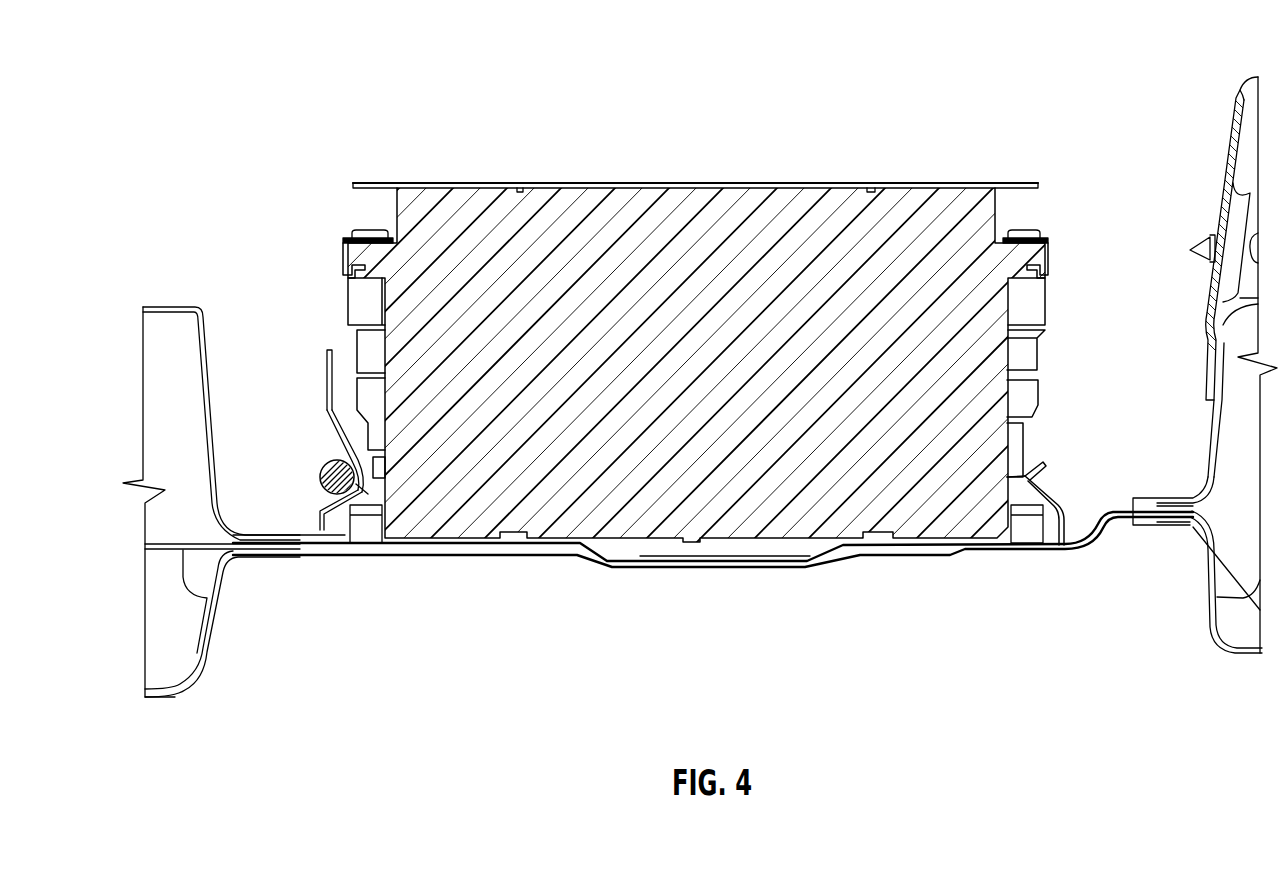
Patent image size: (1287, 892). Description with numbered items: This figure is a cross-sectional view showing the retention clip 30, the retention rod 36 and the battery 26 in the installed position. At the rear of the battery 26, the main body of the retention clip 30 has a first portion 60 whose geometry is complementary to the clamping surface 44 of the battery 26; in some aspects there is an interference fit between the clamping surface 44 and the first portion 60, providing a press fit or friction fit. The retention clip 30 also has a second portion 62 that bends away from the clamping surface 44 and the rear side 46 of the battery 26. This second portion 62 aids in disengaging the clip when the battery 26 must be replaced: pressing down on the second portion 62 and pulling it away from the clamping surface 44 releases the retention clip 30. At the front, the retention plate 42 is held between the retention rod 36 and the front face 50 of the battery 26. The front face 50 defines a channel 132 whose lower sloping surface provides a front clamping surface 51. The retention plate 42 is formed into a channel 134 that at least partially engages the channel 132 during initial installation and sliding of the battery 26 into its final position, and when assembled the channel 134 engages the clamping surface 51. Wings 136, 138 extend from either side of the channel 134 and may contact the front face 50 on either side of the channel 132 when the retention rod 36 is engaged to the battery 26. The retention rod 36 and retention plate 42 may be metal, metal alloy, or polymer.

The battery 26 is at (927, 190).
The retention clip 30 is at (1079, 524).
The retention rod 36 is at (327, 466).
The retention plate 42 is at (340, 437).
The clamping surface 44 is at (1027, 477).
The rear side 46 is at (1010, 378).
The front face 50 is at (350, 338).
The front clamping surface 51 is at (320, 476).
The first portion 60 is at (1060, 504).
The second portion 62 is at (1041, 474).
The channel 132 is at (362, 431).
The channel 134 is at (367, 482).
The wing 136 is at (320, 523).
The wing 138 is at (326, 370).